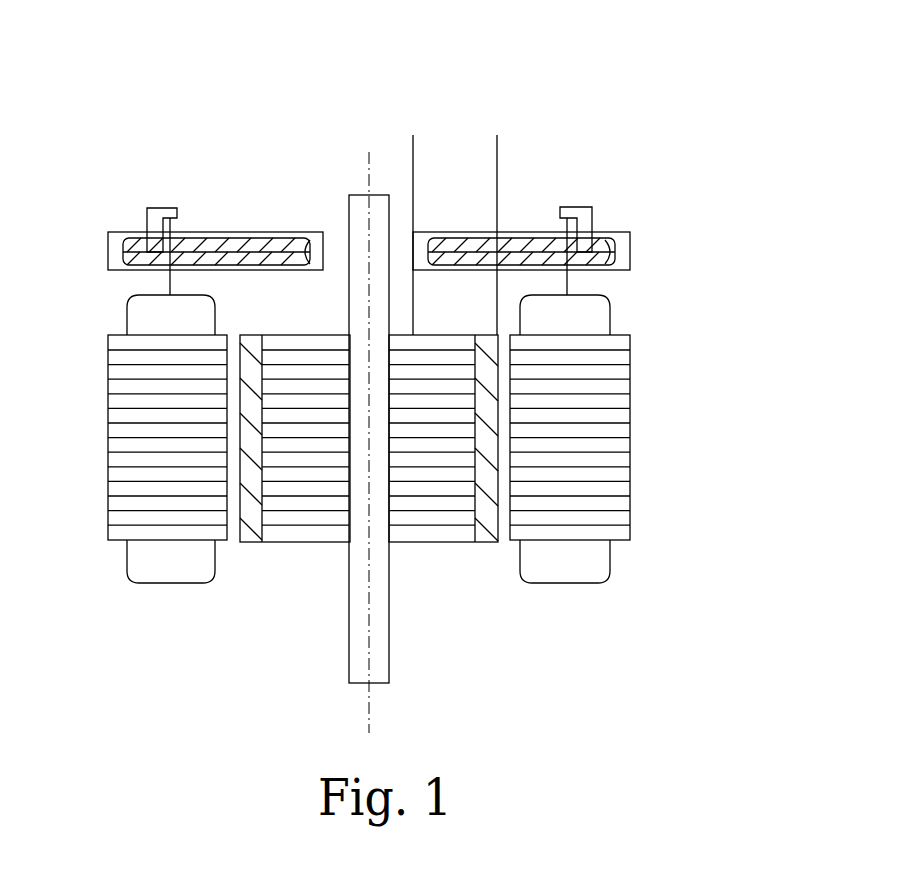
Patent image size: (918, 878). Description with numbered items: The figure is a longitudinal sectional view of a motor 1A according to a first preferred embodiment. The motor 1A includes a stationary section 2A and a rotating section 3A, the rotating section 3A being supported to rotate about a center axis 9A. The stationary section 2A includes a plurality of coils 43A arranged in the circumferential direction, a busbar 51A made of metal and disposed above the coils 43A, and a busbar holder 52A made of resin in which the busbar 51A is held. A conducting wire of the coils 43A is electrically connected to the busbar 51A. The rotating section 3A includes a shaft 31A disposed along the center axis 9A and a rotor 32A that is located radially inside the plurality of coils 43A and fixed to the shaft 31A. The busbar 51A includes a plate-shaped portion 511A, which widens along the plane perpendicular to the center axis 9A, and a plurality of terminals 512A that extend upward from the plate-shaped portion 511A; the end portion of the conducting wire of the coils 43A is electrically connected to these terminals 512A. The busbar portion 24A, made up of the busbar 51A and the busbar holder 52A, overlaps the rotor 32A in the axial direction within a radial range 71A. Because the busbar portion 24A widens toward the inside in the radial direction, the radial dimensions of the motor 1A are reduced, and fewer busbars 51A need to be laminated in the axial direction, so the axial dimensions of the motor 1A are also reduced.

The motor 1A is at (215, 112).
The stationary section 2A is at (650, 433).
The rotating section 3A is at (445, 553).
The center axis 9A is at (367, 173).
The busbar portion 24A is at (553, 80).
The shaft 31A is at (350, 320).
The rotor 32A is at (427, 373).
The coil 43A is at (152, 315).
The busbar 51A is at (512, 125).
The busbar holder 52A is at (613, 240).
The radial range 71A is at (413, 143).
The plate-shaped portion 511A is at (517, 248).
The terminal 512A is at (572, 207).